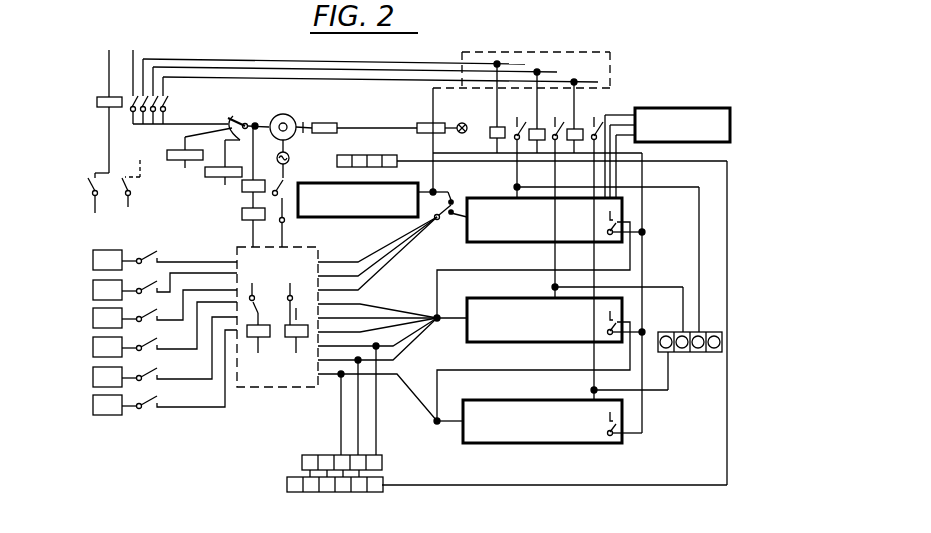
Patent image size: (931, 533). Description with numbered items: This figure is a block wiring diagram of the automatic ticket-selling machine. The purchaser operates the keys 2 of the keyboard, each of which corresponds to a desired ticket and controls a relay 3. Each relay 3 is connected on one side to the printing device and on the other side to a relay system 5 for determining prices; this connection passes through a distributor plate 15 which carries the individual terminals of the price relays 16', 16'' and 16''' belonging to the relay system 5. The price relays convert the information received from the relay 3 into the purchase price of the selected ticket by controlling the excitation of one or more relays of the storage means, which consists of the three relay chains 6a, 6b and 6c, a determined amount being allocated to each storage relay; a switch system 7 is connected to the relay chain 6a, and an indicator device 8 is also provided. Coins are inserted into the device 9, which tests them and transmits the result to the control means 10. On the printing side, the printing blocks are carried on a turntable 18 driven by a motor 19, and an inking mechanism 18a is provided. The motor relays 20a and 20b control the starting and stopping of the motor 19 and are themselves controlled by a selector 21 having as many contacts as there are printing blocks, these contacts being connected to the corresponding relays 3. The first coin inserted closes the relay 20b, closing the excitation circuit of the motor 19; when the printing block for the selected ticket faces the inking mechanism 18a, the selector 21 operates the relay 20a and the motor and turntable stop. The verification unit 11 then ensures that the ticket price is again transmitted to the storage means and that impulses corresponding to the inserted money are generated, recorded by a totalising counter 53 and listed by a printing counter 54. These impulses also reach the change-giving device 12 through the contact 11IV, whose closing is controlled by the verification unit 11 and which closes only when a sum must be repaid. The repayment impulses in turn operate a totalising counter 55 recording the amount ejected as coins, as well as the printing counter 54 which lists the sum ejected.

The key 2 is at (95, 205).
The relay 3 is at (103, 99).
The relay system 5 is at (605, 107).
The relay chain 6a is at (541, 258).
The relay chain 6b is at (541, 359).
The relay chain 6c is at (552, 421).
The switch system 7 is at (667, 153).
The indicator device 8 is at (704, 353).
The coin insertion and testing device 9 is at (110, 415).
The control means 10 is at (270, 365).
The verification unit 11 is at (422, 122).
The contact 11IV is at (479, 188).
The change-giving device 12 is at (358, 200).
The distributor plate 15 is at (552, 62).
The price relay 16' is at (494, 107).
The price relay 16'' is at (534, 111).
The price relay 16''' is at (573, 116).
The turntable 18 is at (279, 114).
The inking mechanism 18a is at (318, 122).
The motor 19 is at (290, 160).
The motor relay 20a is at (242, 189).
The motor relay 20b is at (242, 222).
The selector 21 is at (242, 116).
The totalising counter 53 is at (287, 485).
The printing counter 54 is at (302, 458).
The totalising counter 55 is at (350, 156).